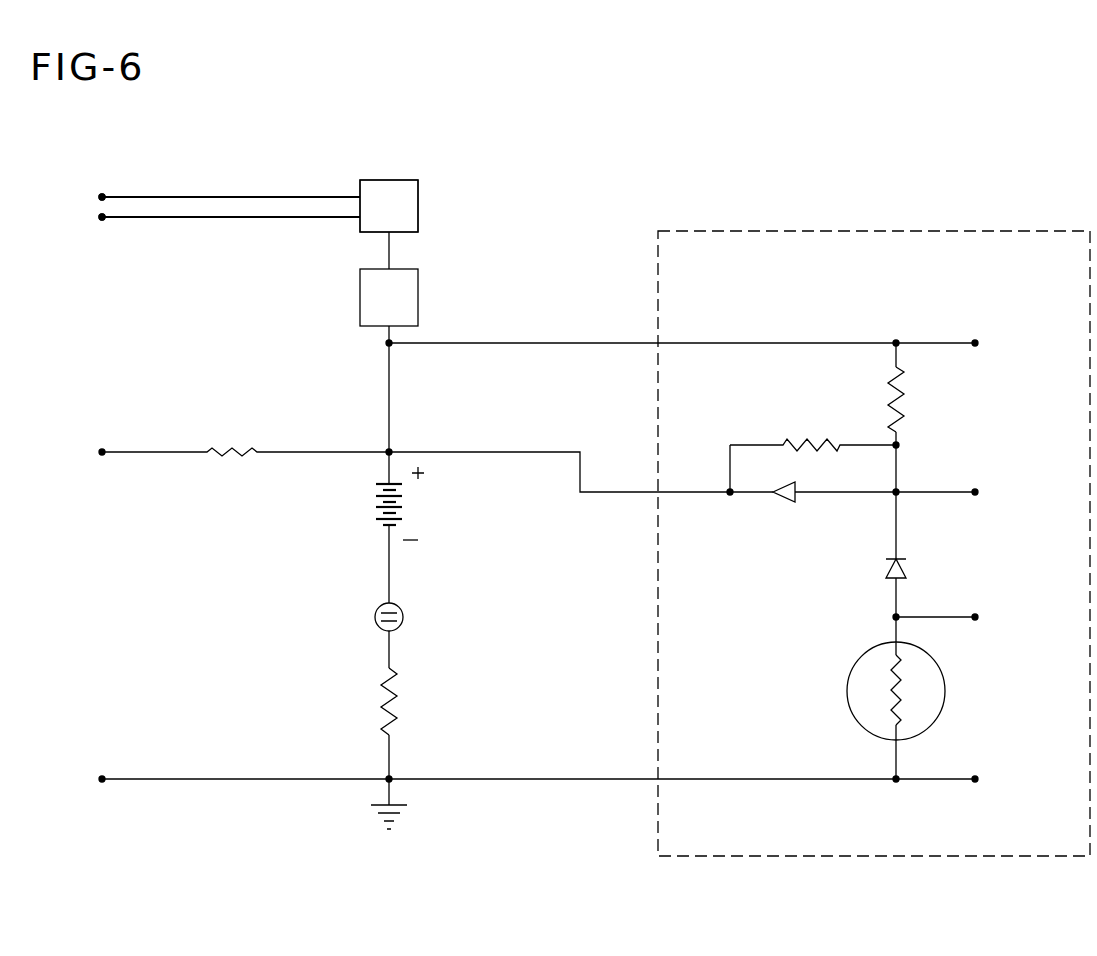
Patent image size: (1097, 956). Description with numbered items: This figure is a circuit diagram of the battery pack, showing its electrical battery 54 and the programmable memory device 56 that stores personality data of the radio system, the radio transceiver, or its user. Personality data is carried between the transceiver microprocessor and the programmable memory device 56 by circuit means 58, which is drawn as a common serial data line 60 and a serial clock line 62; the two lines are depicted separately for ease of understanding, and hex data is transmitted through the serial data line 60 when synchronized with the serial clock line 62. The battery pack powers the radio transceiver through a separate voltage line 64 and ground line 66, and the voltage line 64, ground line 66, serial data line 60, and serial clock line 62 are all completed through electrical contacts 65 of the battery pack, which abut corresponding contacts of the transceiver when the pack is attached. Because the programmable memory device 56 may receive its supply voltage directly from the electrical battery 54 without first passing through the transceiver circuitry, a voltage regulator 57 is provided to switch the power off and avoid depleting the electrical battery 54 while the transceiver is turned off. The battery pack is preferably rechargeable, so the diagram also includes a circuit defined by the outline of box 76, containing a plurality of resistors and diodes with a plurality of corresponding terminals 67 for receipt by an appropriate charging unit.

The electrical battery 54 is at (367, 527).
The programmable memory device 56 is at (418, 205).
The voltage regulator 57 is at (418, 298).
The circuit means 58 is at (300, 173).
The serial data line 60 is at (160, 197).
The serial clock line 62 is at (187, 217).
The voltage line 64 is at (132, 452).
The electrical contacts 65 is at (102, 197).
The ground line 66 is at (228, 778).
The terminals 67 is at (975, 492).
The box 76 is at (882, 231).